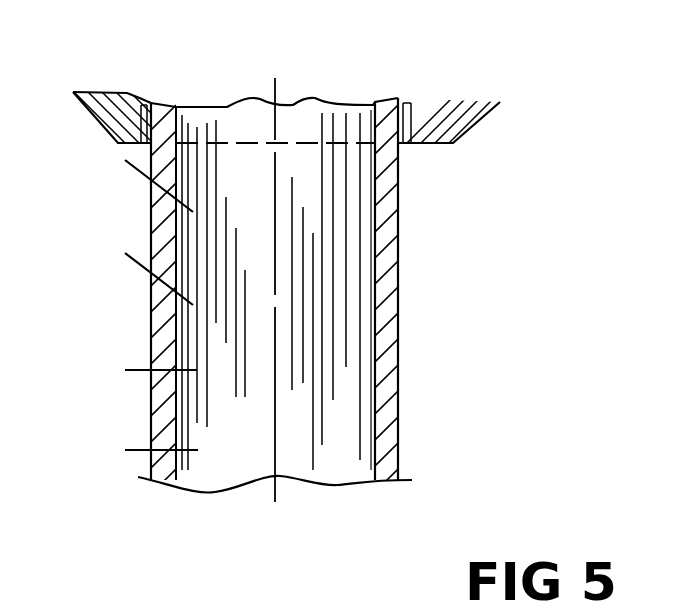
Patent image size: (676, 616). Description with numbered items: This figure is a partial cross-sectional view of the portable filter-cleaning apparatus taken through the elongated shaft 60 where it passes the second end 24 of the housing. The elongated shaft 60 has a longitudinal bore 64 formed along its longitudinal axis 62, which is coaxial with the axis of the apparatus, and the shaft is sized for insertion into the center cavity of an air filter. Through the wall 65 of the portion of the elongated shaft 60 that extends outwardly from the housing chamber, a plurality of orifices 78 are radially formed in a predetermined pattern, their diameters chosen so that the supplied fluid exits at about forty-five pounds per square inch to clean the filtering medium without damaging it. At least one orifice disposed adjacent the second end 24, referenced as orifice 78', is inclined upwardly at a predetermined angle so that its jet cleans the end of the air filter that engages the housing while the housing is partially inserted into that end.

The longitudinal axis 62 is at (272, 100).
The longitudinal bore 64 is at (374, 168).
The second end 24 is at (430, 143).
The elongated shaft 60 is at (400, 255).
The wall 65 is at (383, 352).
The orifices 78 is at (119, 410).
The upwardly inclined orifice 78' is at (115, 249).